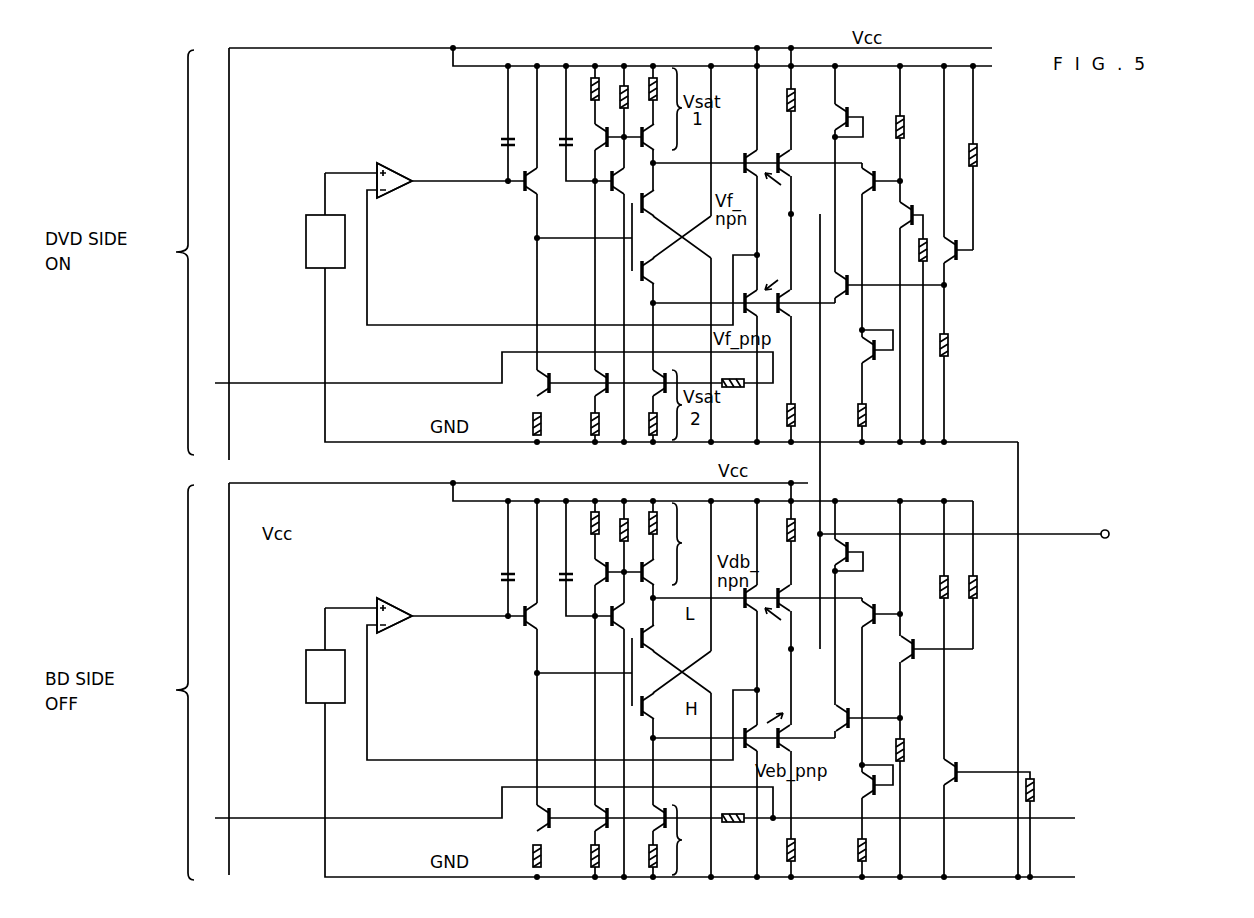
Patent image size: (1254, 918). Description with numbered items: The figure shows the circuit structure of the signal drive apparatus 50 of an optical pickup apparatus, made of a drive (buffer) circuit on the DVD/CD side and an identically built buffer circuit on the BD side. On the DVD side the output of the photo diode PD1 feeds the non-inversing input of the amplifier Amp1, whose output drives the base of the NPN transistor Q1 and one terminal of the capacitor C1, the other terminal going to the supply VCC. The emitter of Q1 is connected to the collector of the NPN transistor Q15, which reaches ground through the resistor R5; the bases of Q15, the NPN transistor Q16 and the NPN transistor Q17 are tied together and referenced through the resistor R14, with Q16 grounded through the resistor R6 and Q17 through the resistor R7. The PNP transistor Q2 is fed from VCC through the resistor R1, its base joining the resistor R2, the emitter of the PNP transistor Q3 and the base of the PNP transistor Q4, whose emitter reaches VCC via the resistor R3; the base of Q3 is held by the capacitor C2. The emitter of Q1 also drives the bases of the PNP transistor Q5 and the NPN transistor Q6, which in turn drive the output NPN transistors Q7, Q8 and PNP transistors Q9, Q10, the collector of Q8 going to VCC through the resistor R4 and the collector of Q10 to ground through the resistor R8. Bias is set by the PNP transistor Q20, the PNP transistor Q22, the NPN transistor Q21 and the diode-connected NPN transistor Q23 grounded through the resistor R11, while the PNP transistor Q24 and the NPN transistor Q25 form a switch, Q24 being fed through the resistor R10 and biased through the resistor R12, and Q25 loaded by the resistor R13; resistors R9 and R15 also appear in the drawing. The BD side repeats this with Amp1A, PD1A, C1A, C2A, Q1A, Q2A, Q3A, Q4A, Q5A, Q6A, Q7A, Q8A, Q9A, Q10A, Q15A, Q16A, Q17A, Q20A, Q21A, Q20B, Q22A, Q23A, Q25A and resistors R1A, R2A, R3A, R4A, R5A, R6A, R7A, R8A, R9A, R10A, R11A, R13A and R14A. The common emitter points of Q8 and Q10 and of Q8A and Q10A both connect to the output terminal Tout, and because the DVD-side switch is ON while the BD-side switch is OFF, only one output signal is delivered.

The signal drive apparatus 50 is at (1133, 187).
The amplifier Amp1 is at (387, 170).
The photo diode PD1 is at (325, 241).
The capacitor C1 is at (501, 129).
The capacitor C2 is at (559, 129).
The NPN transistor Q1 is at (545, 181).
The PNP transistor Q2 is at (596, 137).
The PNP transistor Q3 is at (627, 181).
The PNP transistor Q4 is at (659, 137).
The PNP transistor Q5 is at (658, 203).
The NPN transistor Q6 is at (658, 271).
The NPN transistor Q7 is at (764, 154).
The NPN transistor Q8 is at (798, 154).
The PNP transistor Q9 is at (748, 292).
The PNP transistor Q10 is at (803, 308).
The NPN transistor Q15 is at (530, 387).
The NPN transistor Q16 is at (588, 387).
The NPN transistor Q17 is at (646, 387).
The PNP transistor Q20 is at (831, 117).
The NPN transistor Q21 is at (861, 181).
The PNP transistor Q22 is at (853, 294).
The NPN transistor Q23 is at (861, 350).
The PNP transistor Q24 is at (894, 215).
The NPN transistor Q25 is at (968, 258).
The resistor R1 is at (588, 97).
The resistor R2 is at (635, 106).
The resistor R3 is at (664, 97).
The resistor R4 is at (802, 108).
The resistor R5 is at (551, 418).
The resistor R6 is at (585, 425).
The resistor R7 is at (644, 425).
The resistor R8 is at (802, 405).
The resistor R9 is at (735, 372).
The resistor R10 is at (917, 136).
The resistor R11 is at (879, 405).
The resistor R12 is at (936, 238).
The resistor R13 is at (963, 345).
The resistor R14 is at (992, 155).
The resistor R15 is at (1048, 790).
The amplifier Amp1A is at (388, 604).
The photo diode PD1A is at (325, 676).
The capacitor C1A is at (497, 565).
The capacitor C2A is at (556, 565).
The NPN transistor Q1A is at (551, 616).
The PNP transistor Q2A is at (594, 572).
The PNP transistor Q3A is at (633, 616).
The PNP transistor Q4A is at (664, 572).
The PNP transistor Q5A is at (664, 638).
The NPN transistor Q6A is at (664, 706).
The NPN transistor Q7A is at (769, 589).
The NPN transistor Q8A is at (804, 589).
The PNP transistor Q9A is at (769, 721).
The PNP transistor Q10A is at (809, 743).
The NPN transistor Q15A is at (526, 822).
The NPN transistor Q16A is at (584, 822).
The NPN transistor Q17A is at (685, 811).
The PNP transistor Q20A is at (862, 566).
The NPN transistor Q21A is at (861, 614).
The transistor Q20B is at (898, 649).
The PNP transistor Q22A is at (824, 718).
The NPN transistor Q23A is at (859, 785).
The NPN transistor Q25A is at (971, 780).
The resistor R1A is at (587, 532).
The resistor R2A is at (640, 539).
The resistor R3A is at (670, 532).
The resistor R4A is at (808, 538).
The resistor R5A is at (557, 851).
The resistor R6A is at (580, 858).
The resistor R7A is at (672, 858).
The resistor R8A is at (808, 841).
The resistor R9A is at (740, 807).
The resistor R10A is at (926, 587).
The resistor R11A is at (885, 841).
The resistor R13A is at (924, 750).
The resistor R14A is at (998, 587).
The output terminal Tout is at (987, 535).